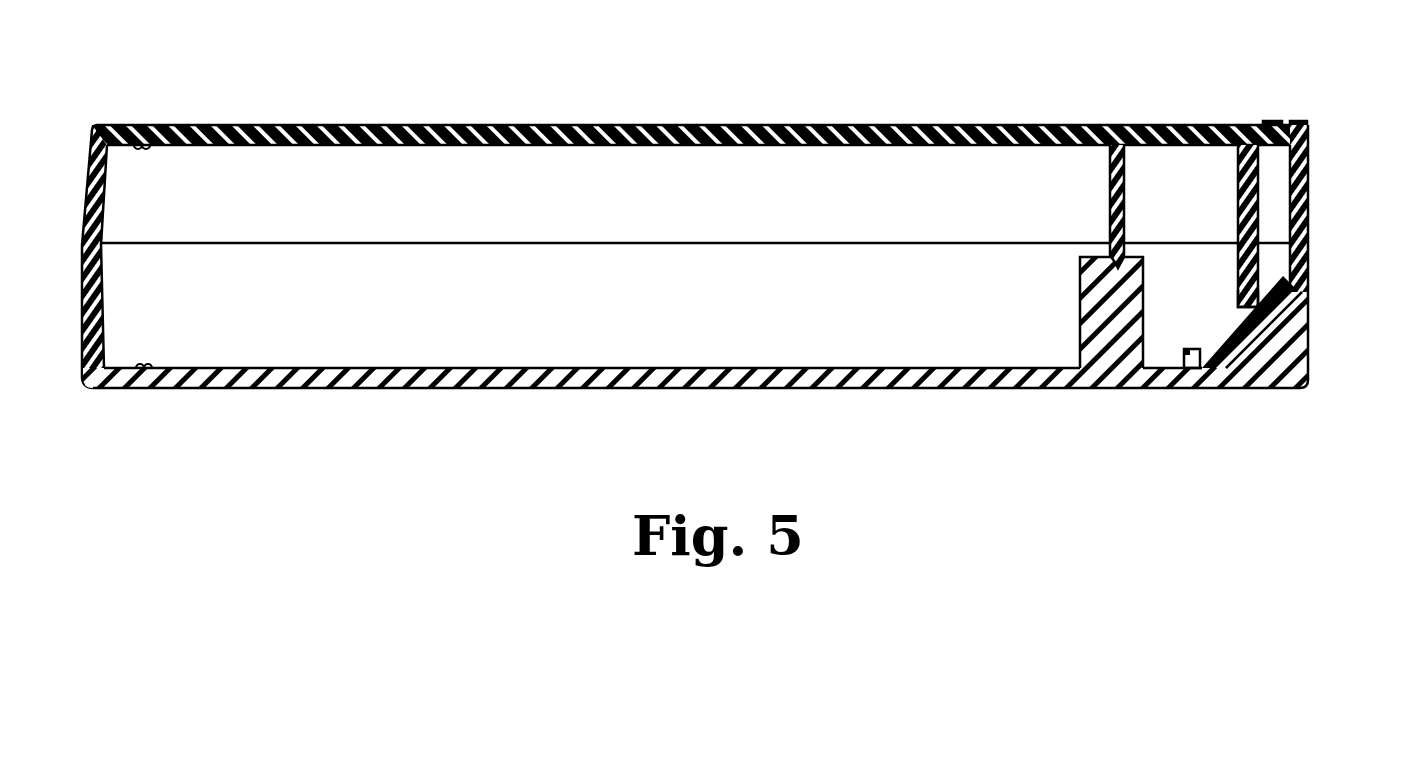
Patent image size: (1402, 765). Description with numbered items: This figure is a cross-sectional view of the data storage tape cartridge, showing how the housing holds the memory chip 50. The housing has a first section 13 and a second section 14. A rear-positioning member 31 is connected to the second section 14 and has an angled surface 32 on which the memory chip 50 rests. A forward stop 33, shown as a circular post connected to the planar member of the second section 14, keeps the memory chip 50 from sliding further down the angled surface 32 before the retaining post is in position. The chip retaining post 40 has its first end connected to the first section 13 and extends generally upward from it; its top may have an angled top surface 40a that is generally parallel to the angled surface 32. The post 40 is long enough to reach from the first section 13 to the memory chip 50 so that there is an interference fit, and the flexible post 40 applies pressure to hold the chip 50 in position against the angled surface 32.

The first section 13 is at (590, 126).
The second section 14 is at (645, 388).
The rear-positioning member 31 is at (1258, 338).
The angled surface 32 is at (1245, 337).
The forward stop 33 is at (1172, 362).
The chip retaining post 40 is at (1240, 195).
The angled top surface 40a is at (1240, 290).
The memory chip 50 is at (1228, 337).